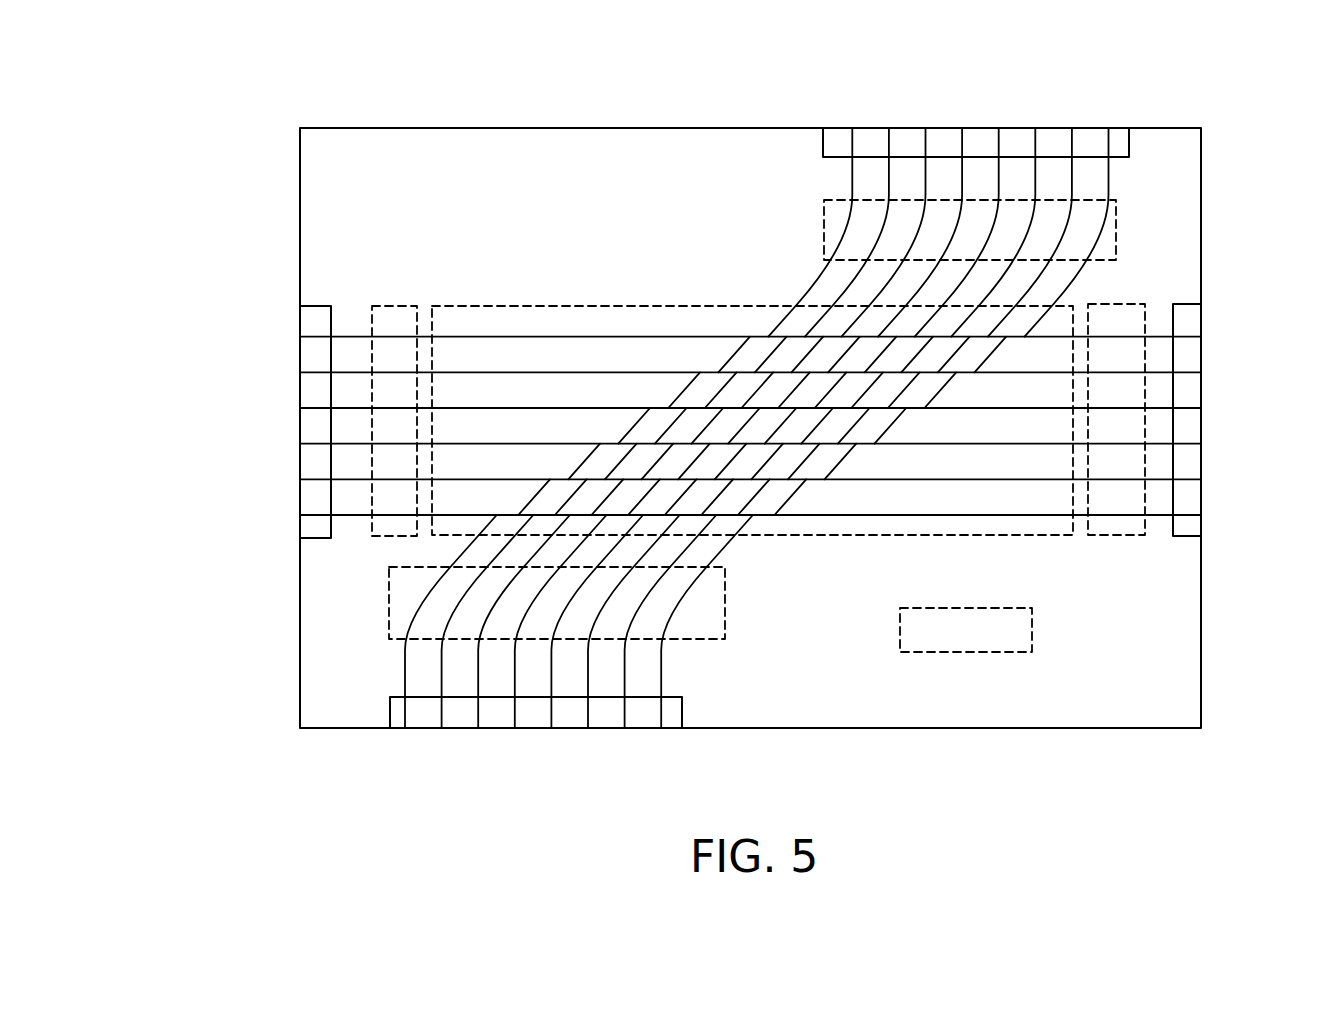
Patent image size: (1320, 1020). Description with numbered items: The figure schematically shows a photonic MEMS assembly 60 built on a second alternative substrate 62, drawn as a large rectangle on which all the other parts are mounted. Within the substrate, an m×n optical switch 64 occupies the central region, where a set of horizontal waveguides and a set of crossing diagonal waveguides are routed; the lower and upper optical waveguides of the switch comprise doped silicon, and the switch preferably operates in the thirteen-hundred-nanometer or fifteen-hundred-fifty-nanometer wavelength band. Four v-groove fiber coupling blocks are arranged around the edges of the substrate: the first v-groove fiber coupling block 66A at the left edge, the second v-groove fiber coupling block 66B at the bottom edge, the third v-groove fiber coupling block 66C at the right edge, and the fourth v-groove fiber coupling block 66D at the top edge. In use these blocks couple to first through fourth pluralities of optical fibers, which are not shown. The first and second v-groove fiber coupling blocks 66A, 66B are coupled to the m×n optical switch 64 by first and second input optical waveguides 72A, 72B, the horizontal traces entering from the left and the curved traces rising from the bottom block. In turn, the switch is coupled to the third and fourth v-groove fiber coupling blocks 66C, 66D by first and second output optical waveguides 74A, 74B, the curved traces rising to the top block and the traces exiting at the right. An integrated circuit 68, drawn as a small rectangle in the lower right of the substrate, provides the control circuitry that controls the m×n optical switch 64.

The photonic MEMS assembly 60 is at (230, 149).
The second alternative substrate 62 is at (1203, 693).
The m×n optical switch 64 is at (963, 536).
The first v-groove fiber coupling block 66A is at (300, 525).
The second v-groove fiber coupling block 66B is at (397, 728).
The third v-groove fiber coupling block 66C is at (1201, 520).
The fourth v-groove fiber coupling block 66D is at (1117, 128).
The integrated circuit 68 is at (953, 652).
The first input optical waveguides 72A is at (395, 306).
The second input optical waveguides 72B is at (725, 590).
The first output optical waveguides 74A is at (824, 236).
The second output optical waveguides 74B is at (1115, 536).